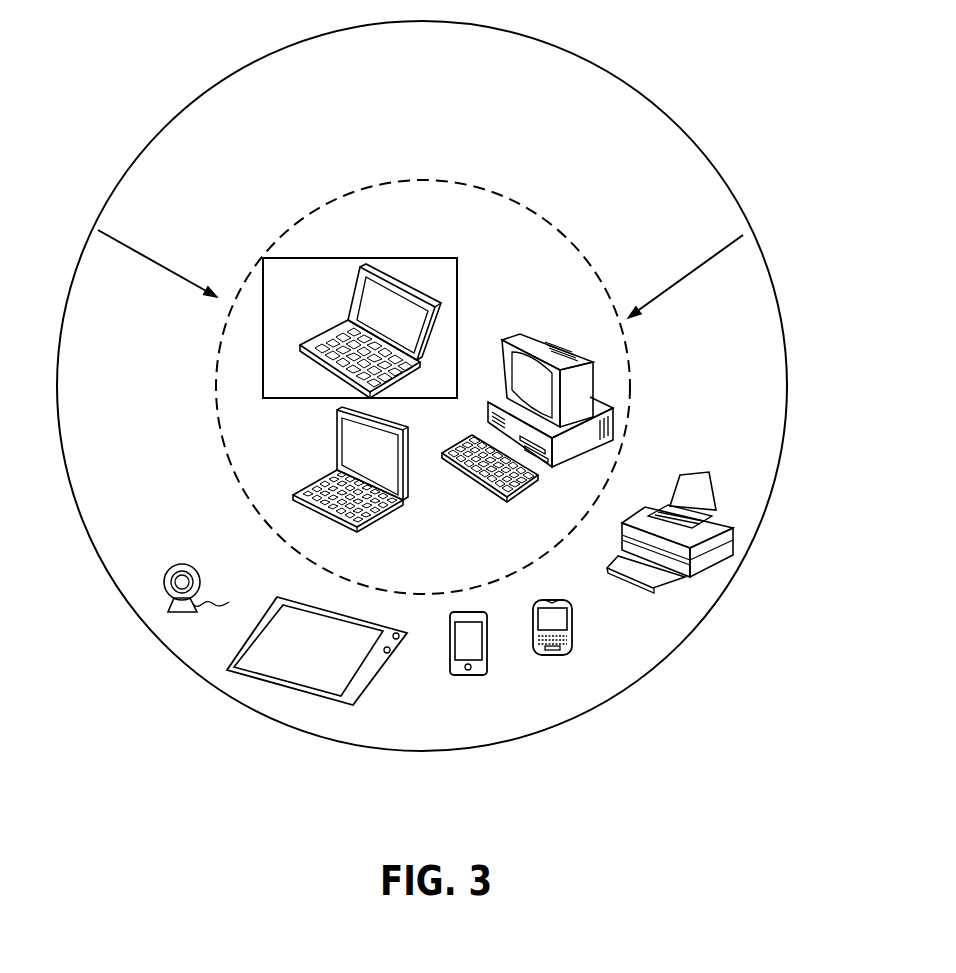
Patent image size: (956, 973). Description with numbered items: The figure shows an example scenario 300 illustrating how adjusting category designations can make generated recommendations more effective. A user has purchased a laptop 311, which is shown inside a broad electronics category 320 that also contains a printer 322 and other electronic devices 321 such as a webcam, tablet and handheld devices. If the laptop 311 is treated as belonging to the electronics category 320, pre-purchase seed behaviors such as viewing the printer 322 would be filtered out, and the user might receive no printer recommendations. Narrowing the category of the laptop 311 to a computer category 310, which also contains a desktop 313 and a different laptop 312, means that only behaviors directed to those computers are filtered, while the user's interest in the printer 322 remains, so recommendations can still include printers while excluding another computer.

The example scenario 300 is at (242, 25).
The computer category 310 is at (483, 180).
The laptop 311 is at (478, 294).
The different laptop 312 is at (392, 526).
The desktop 313 is at (506, 511).
The electronics category 320 is at (789, 358).
The peripheral devices 321 is at (197, 639).
The printer 322 is at (716, 460).